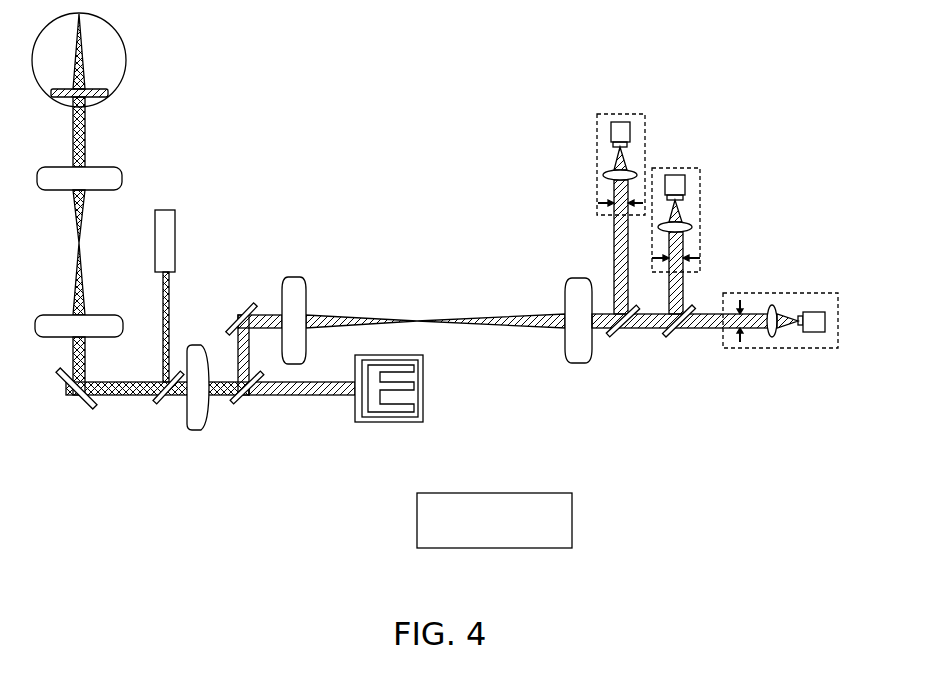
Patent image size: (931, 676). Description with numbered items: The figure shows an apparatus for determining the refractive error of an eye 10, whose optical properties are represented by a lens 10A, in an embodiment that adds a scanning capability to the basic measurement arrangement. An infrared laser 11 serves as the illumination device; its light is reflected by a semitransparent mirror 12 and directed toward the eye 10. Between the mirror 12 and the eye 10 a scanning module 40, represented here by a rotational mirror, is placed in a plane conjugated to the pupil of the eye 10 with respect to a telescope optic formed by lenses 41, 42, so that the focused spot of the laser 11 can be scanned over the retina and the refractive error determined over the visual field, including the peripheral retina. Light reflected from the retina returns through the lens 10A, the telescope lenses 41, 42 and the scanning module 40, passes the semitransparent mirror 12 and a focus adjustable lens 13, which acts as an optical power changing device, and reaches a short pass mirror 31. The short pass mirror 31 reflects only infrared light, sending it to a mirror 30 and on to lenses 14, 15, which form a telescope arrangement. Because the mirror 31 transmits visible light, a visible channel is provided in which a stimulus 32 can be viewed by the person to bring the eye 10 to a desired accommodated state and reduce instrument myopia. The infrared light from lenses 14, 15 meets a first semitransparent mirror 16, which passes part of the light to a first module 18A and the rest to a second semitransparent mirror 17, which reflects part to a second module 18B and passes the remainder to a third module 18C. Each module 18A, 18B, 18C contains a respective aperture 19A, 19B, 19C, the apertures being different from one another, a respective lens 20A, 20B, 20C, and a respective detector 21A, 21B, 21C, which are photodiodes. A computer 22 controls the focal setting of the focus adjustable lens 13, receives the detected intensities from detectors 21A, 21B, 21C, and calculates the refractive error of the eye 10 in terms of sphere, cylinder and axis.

The eye 10 is at (118, 36).
The lens 10A is at (106, 93).
The lens 42 is at (122, 178).
The lens 41 is at (100, 313).
The scanning module 40 is at (73, 396).
The infrared laser 11 is at (175, 218).
The semitransparent mirror 12 is at (153, 398).
The focus adjustable lens 13 is at (193, 432).
The mirror 30 is at (245, 313).
The short pass mirror 31 is at (240, 398).
The lens 14 is at (293, 277).
The stimulus 32 is at (423, 383).
The lens 15 is at (565, 288).
The first semitransparent mirror 16 is at (614, 337).
The second semitransparent mirror 17 is at (669, 337).
The first module 18A is at (589, 142).
The second module 18B is at (720, 195).
The third module 18C is at (795, 319).
The aperture 19A is at (598, 203).
The aperture 19B is at (700, 258).
The aperture 19C is at (740, 348).
The lens 20A is at (603, 173).
The lens 20B is at (692, 227).
The lens 20C is at (772, 337).
The detector 21A is at (610, 126).
The detector 21B is at (677, 172).
The detector 21C is at (817, 312).
The computer 22 is at (572, 515).